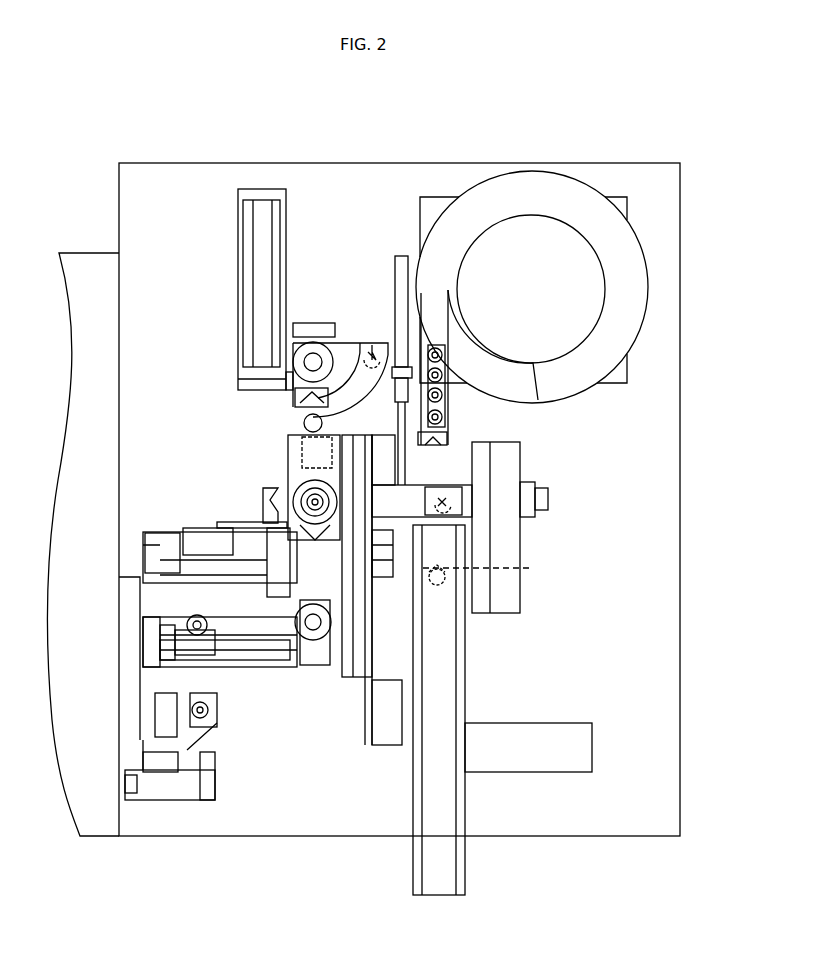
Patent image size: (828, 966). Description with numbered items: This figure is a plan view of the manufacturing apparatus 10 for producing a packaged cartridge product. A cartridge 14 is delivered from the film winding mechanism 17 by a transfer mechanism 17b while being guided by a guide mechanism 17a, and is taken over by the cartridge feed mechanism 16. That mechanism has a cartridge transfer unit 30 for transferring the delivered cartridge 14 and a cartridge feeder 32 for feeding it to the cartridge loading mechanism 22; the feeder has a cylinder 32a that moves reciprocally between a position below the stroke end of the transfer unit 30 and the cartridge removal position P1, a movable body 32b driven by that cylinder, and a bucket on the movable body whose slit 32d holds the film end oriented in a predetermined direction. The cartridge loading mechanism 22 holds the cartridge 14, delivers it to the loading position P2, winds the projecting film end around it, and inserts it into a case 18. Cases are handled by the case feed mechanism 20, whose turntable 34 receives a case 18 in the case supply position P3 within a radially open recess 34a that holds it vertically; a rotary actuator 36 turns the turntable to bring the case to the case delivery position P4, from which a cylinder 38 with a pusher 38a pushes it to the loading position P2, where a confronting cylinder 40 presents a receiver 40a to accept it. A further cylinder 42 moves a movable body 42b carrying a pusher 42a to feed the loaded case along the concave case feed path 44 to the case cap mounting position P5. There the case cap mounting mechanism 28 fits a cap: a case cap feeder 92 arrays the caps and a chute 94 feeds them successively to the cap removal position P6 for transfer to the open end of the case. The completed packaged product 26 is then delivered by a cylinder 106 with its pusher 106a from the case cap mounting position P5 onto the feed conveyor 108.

The manufacturing apparatus 10 is at (532, 160).
The cartridge 14 is at (215, 707).
The cartridge feed mechanism 16 is at (205, 660).
The film winding mechanism 17 is at (102, 248).
The guide mechanism 17a is at (203, 753).
The transfer mechanism 17b is at (210, 726).
The case 18 is at (383, 460).
The case feed mechanism 20 is at (319, 322).
The cartridge loading mechanism 22 is at (345, 680).
The packaged product 26 is at (437, 585).
The case cap mounting mechanism 28 is at (524, 448).
The cartridge transfer unit 30 is at (136, 700).
The cartridge feeder 32 is at (270, 612).
The cylinder 32a is at (150, 620).
The movable body 32b is at (165, 662).
The slit 32d is at (197, 615).
The turntable 34 is at (352, 341).
The recess 34a is at (303, 440).
The rotary actuator 36 is at (305, 330).
The cylinder 38 is at (245, 381).
The pusher 38a is at (289, 376).
The cylinder 40 is at (282, 600).
The receiver 40a is at (262, 523).
The cylinder 42 is at (145, 546).
The pusher 42a is at (264, 491).
The movable body 42b is at (193, 542).
The case feed path 44 is at (404, 507).
The case cap feeder 92 is at (612, 234).
The chute 94 is at (447, 364).
The cylinder 106 is at (402, 260).
The pusher 106a is at (430, 455).
The feed conveyor 108 is at (464, 671).
The cartridge removal position P1 is at (311, 629).
The loading position P2 is at (306, 493).
The case supply position P3 is at (373, 348).
The case delivery position P4 is at (305, 421).
The case cap mounting position P5 is at (448, 493).
The cap removal position P6 is at (444, 432).